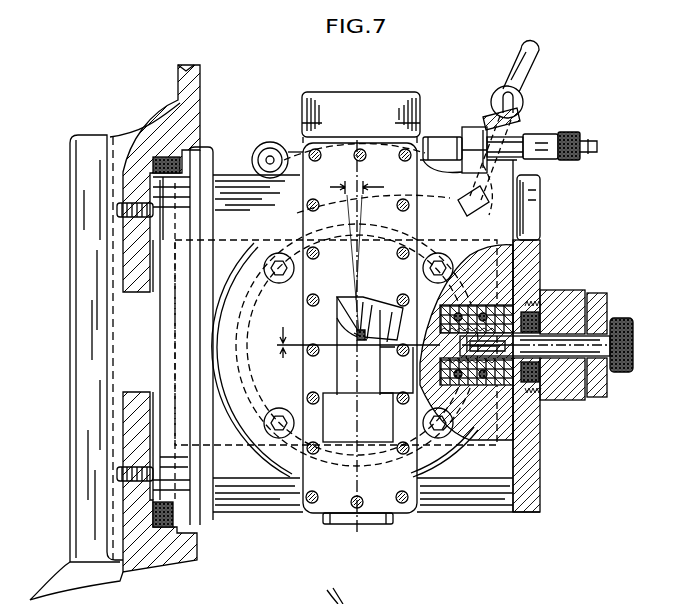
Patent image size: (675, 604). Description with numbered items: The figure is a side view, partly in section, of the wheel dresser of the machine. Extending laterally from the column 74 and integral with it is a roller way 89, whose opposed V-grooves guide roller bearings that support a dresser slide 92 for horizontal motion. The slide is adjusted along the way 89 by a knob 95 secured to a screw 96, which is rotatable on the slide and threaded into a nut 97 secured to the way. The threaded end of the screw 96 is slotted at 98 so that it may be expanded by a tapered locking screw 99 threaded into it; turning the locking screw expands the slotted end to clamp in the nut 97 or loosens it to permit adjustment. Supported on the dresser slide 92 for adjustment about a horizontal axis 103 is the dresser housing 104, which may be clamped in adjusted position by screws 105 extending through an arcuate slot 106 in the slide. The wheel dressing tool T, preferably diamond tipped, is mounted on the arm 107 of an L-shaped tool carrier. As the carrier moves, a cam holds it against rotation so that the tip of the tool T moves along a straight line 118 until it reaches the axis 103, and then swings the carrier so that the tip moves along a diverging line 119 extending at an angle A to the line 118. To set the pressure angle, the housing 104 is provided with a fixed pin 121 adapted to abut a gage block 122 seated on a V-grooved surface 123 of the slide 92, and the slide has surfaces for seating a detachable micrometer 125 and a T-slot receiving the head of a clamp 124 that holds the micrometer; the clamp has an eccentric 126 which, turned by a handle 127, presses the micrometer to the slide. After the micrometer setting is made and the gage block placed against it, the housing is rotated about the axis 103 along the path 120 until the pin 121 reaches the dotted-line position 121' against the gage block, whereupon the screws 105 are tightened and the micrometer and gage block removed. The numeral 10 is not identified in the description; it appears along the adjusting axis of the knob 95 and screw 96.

The column 74 is at (170, 135).
The path 120 is at (330, 147).
The fixed pin 121 is at (277, 140).
The dotted line position of pin 121' is at (354, 117).
The gage block 122 is at (441, 137).
The V-grooved surface 123 is at (437, 164).
The clamp 124 is at (479, 207).
The detachable micrometer 125 is at (470, 126).
The eccentric 126 is at (523, 101).
The handle 127 is at (534, 48).
The roller way 89 is at (490, 270).
The screw 96 is at (467, 308).
The nut 97 is at (469, 384).
The knob 95 is at (600, 310).
The adjusting shaft and knob 10 is at (625, 340).
The dresser housing 104 is at (293, 322).
The screws 105 is at (279, 264).
The arcuate slot 106 is at (247, 306).
The arm of tool carrier 107 is at (372, 305).
The diverging line 119 is at (347, 224).
The horizontal axis 103 is at (357, 342).
The tapered locking screw 99 is at (432, 366).
The straight line 118 is at (358, 417).
The slot 98 is at (522, 408).
The dresser slide 92 is at (500, 463).
The wheel dressing tool T is at (356, 333).
The angle A is at (357, 256).